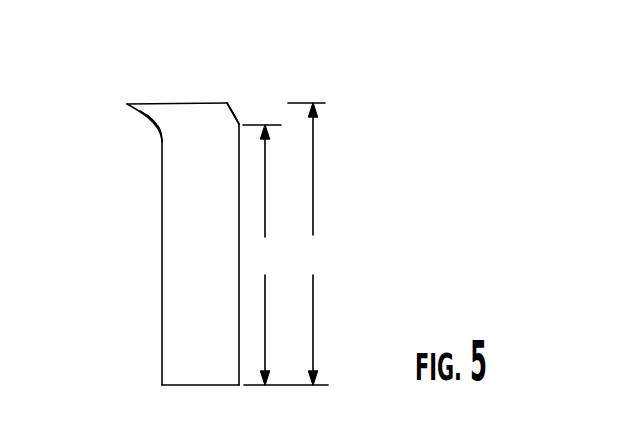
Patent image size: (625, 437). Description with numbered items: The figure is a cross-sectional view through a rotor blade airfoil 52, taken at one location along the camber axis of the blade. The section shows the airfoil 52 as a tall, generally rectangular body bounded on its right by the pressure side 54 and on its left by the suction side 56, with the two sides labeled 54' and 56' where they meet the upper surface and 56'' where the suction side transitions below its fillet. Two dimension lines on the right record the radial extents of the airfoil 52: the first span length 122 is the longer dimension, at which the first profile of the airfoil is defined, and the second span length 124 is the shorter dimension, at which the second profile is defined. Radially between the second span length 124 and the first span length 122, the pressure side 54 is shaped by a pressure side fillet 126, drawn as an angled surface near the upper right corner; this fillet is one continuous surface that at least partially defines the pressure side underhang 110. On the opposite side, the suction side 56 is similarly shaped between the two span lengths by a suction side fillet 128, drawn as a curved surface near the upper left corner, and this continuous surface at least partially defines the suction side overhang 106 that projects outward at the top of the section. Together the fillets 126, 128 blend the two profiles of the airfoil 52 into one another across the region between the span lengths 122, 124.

The airfoil 52 is at (217, 258).
The pressure side 54 is at (221, 254).
The chamfered corner edge 54' is at (224, 72).
The suction side 56 is at (137, 262).
The rounded corner edge 56' is at (112, 104).
The lower fillet transition 56'' is at (125, 154).
The suction side overhang 106 is at (127, 103).
The pressure side underhang 110 is at (230, 106).
The pressure side fillet 126 is at (237, 120).
The suction side fillet 128 is at (147, 117).
The first span length 122 is at (309, 244).
The second span length 124 is at (262, 255).